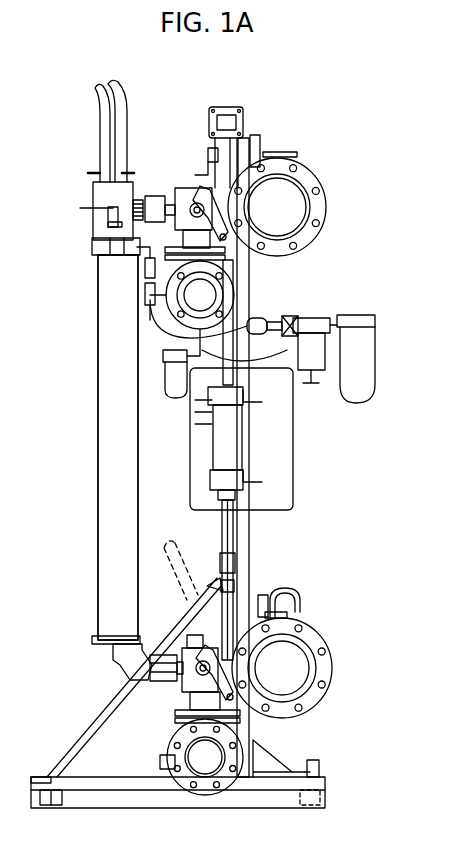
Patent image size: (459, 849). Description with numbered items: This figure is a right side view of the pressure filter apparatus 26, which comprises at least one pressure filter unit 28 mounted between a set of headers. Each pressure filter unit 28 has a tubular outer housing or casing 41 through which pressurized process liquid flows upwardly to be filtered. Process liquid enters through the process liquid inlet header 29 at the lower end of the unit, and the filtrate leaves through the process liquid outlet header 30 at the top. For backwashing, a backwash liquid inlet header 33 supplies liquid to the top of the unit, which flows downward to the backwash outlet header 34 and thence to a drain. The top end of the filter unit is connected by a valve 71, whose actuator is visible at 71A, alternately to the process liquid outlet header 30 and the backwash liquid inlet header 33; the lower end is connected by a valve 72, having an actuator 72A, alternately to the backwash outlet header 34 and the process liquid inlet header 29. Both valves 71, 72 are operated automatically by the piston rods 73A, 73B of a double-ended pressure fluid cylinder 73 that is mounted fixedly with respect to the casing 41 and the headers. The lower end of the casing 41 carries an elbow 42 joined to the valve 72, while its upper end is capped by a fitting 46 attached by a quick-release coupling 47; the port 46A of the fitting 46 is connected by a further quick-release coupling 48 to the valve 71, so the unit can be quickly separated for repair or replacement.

The pressure filter apparatus 26 is at (91, 131).
The pressure filter unit 28 is at (91, 449).
The process liquid inlet header 29 is at (300, 660).
The process liquid outlet header 30 is at (291, 200).
The backwash liquid inlet header 33 is at (197, 302).
The backwash outlet header 34 is at (200, 752).
The tubular outer housing or casing 41 is at (106, 487).
The elbow 42 is at (114, 652).
The fitting 46 is at (93, 190).
The port 46A is at (139, 199).
The quick-release coupling 47 is at (106, 218).
The quick-release coupling 48 is at (156, 196).
The valve 71 is at (185, 186).
The actuator 71A is at (205, 188).
The valve 72 is at (186, 648).
The actuator 72A is at (185, 690).
The double-ended pressure fluid cylinder 73 is at (231, 442).
The piston rod 73A is at (228, 320).
The piston rod 73B is at (231, 536).